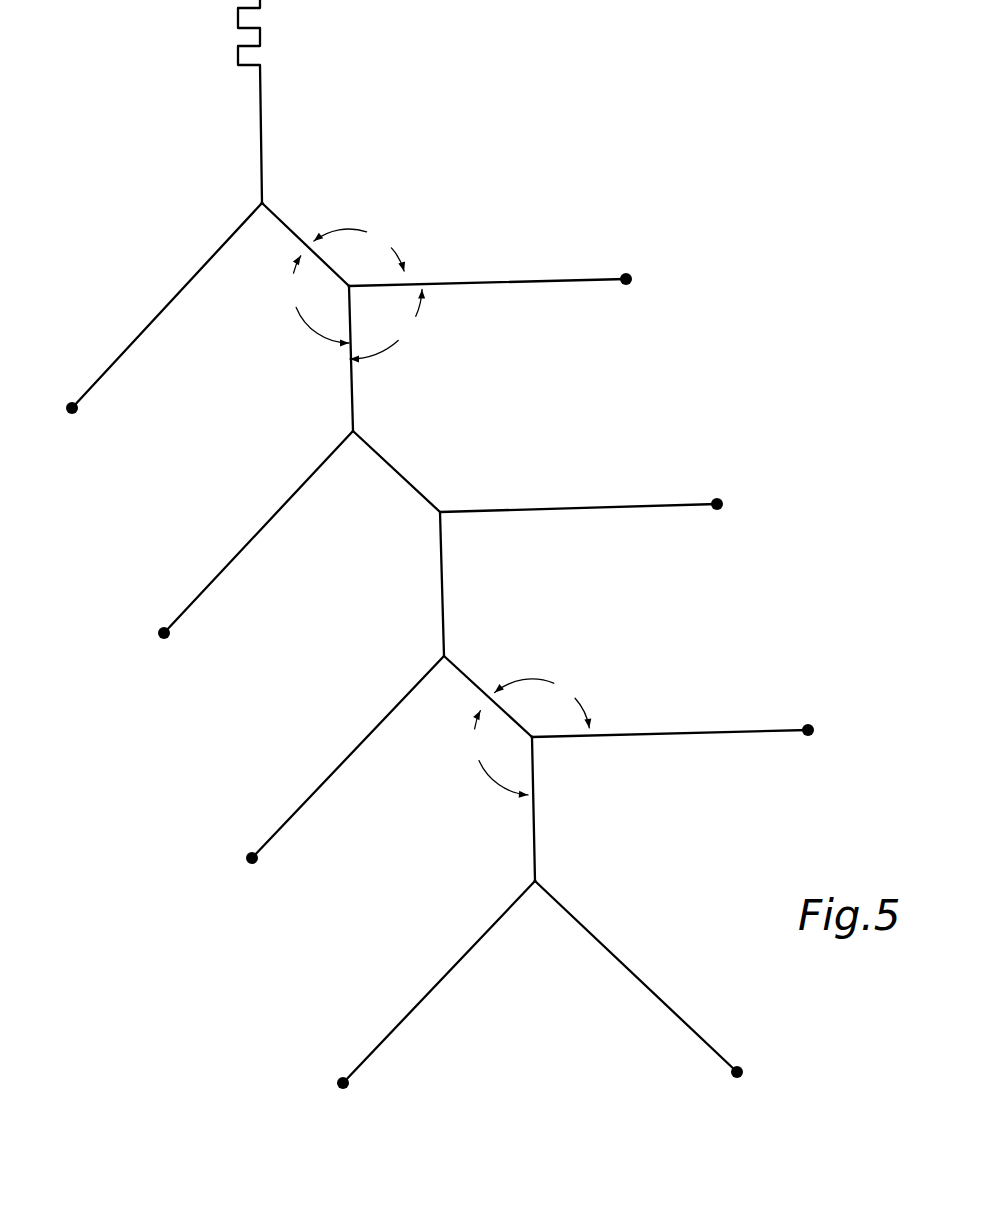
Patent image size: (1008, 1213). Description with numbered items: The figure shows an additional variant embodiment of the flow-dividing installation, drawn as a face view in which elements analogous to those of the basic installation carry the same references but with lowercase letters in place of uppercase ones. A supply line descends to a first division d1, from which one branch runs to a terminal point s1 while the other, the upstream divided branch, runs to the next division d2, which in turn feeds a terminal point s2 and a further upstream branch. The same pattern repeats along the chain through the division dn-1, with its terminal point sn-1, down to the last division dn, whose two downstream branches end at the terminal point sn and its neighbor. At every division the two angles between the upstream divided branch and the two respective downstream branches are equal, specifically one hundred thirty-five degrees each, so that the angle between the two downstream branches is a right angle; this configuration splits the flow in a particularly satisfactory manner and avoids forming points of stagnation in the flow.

The first branching node d1 is at (265, 201).
The first sink/terminal s1 is at (61, 401).
The second branching node d2 is at (353, 290).
The second sink/terminal s2 is at (639, 268).
The (n-1)th branching node dn-1 is at (538, 740).
The (n-1)th sink/terminal sn-1 is at (828, 718).
The nth branching node dn is at (533, 881).
The nth sink/terminal sn is at (332, 1097).